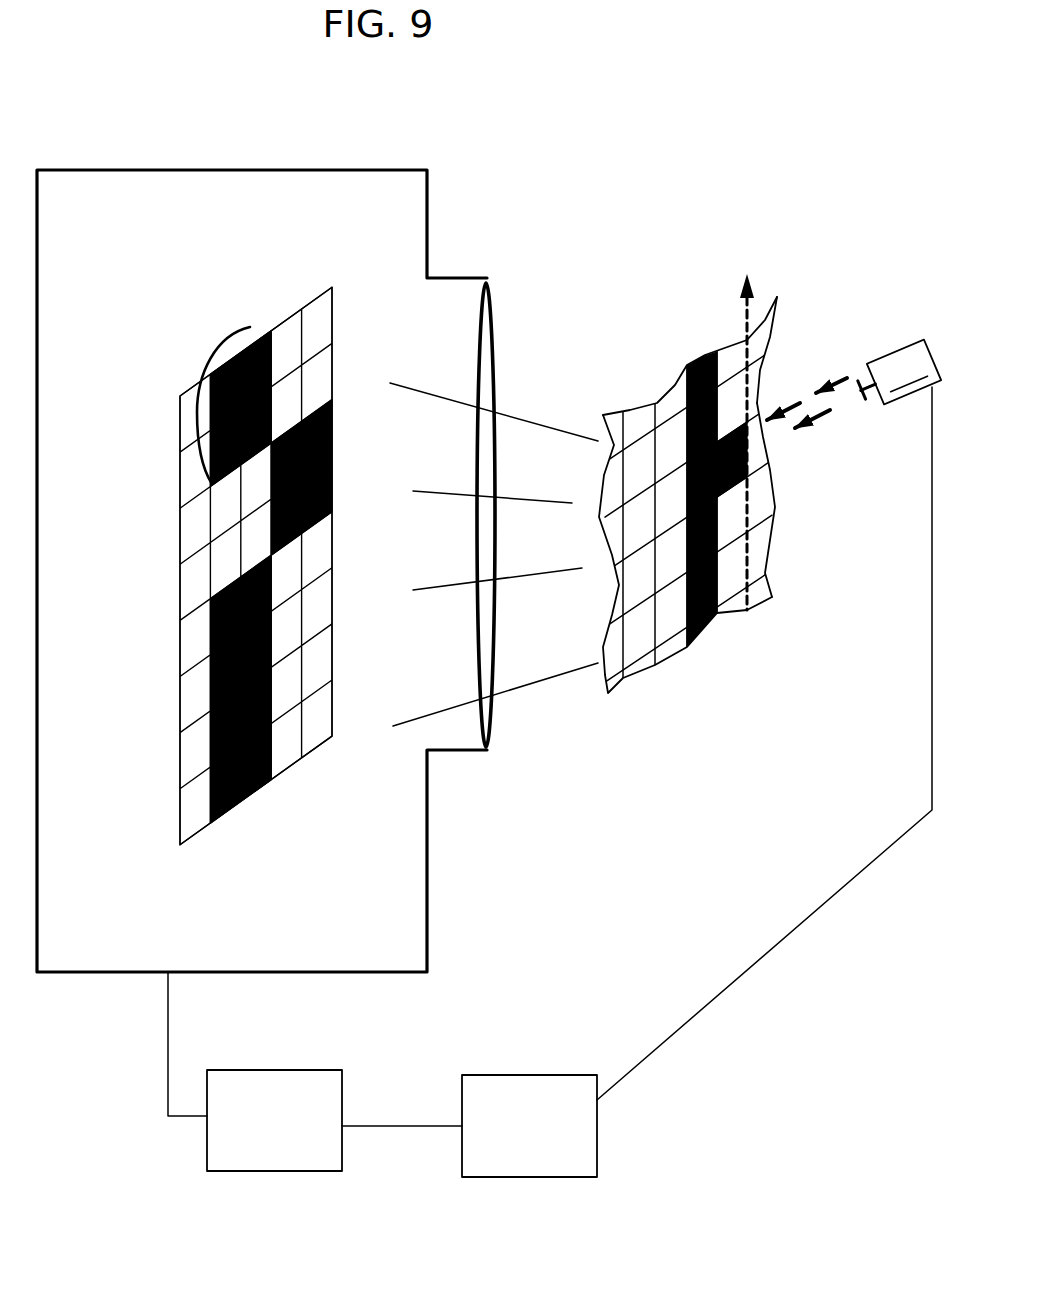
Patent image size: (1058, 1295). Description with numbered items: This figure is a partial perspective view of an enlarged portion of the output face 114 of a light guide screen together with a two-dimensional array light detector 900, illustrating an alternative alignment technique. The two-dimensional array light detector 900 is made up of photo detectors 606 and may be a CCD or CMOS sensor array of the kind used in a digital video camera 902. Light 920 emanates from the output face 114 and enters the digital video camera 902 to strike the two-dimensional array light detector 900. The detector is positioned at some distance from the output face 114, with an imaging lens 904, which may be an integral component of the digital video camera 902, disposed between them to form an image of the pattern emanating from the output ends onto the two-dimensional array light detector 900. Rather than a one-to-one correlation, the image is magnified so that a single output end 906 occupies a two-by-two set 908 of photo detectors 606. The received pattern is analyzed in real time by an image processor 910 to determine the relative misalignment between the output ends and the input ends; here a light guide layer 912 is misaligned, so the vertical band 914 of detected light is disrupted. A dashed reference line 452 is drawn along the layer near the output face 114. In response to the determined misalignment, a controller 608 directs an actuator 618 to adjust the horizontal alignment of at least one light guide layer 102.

The two-dimensional array light detector 900 is at (176, 534).
The digital video camera 902 is at (436, 177).
The imaging lens 904 is at (496, 316).
The single output end 906 is at (686, 398).
The 2×2 set of photo detectors 908 is at (193, 433).
The image processor 910 is at (254, 1144).
The light guide layer 912 is at (774, 459).
The vertical band of detected light 914 is at (277, 797).
The light 920 is at (543, 689).
The photo detectors 606 is at (323, 317).
The controller 608 is at (697, 782).
The actuator 618 is at (854, 384).
The light guide layer 102 is at (803, 335).
The output face 114 is at (782, 294).
The scan line / reference line 452 is at (744, 283).